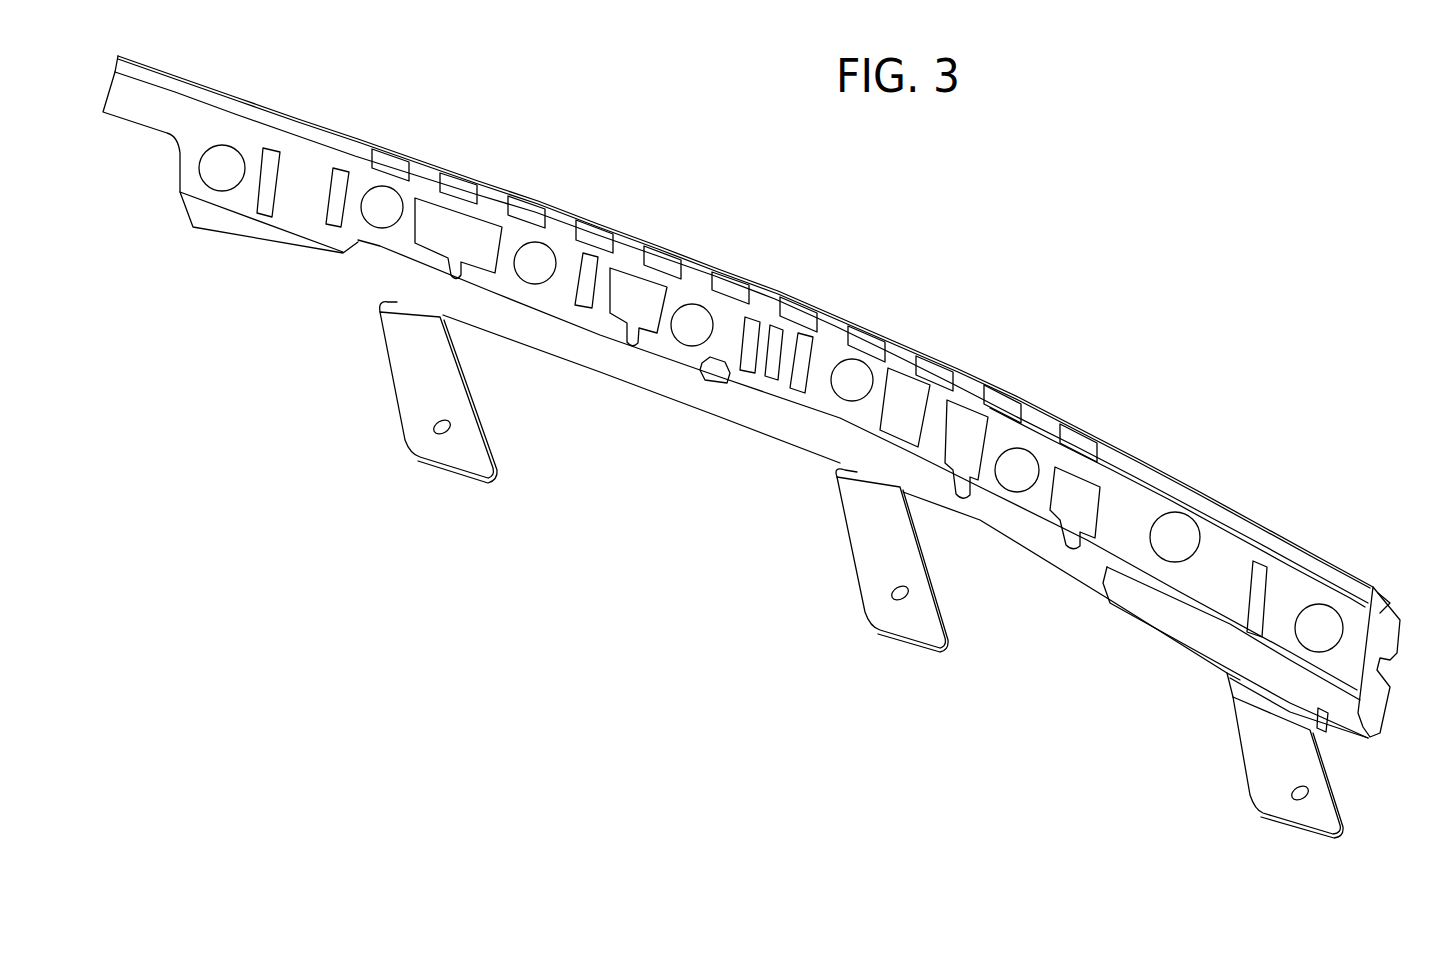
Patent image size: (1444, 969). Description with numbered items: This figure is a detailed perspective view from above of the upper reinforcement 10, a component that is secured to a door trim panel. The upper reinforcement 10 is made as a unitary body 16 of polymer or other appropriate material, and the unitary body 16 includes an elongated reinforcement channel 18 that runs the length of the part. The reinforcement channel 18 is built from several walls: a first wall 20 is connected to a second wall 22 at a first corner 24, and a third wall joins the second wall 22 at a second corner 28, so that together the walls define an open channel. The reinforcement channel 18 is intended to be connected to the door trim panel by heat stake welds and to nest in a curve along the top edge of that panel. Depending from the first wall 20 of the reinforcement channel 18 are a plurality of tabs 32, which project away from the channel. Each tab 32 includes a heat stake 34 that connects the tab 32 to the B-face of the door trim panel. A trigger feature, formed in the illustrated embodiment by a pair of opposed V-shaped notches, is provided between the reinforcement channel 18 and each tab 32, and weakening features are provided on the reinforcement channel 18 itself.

The upper reinforcement 10 is at (975, 268).
The unitary body 16 is at (1380, 613).
The reinforcement channel 18 is at (1128, 515).
The first wall 20 is at (670, 382).
The second wall 22 is at (567, 280).
The first corner 24 is at (390, 255).
The second corner 28 is at (352, 140).
The tab 32 is at (415, 381).
The heat stake 34 is at (437, 428).